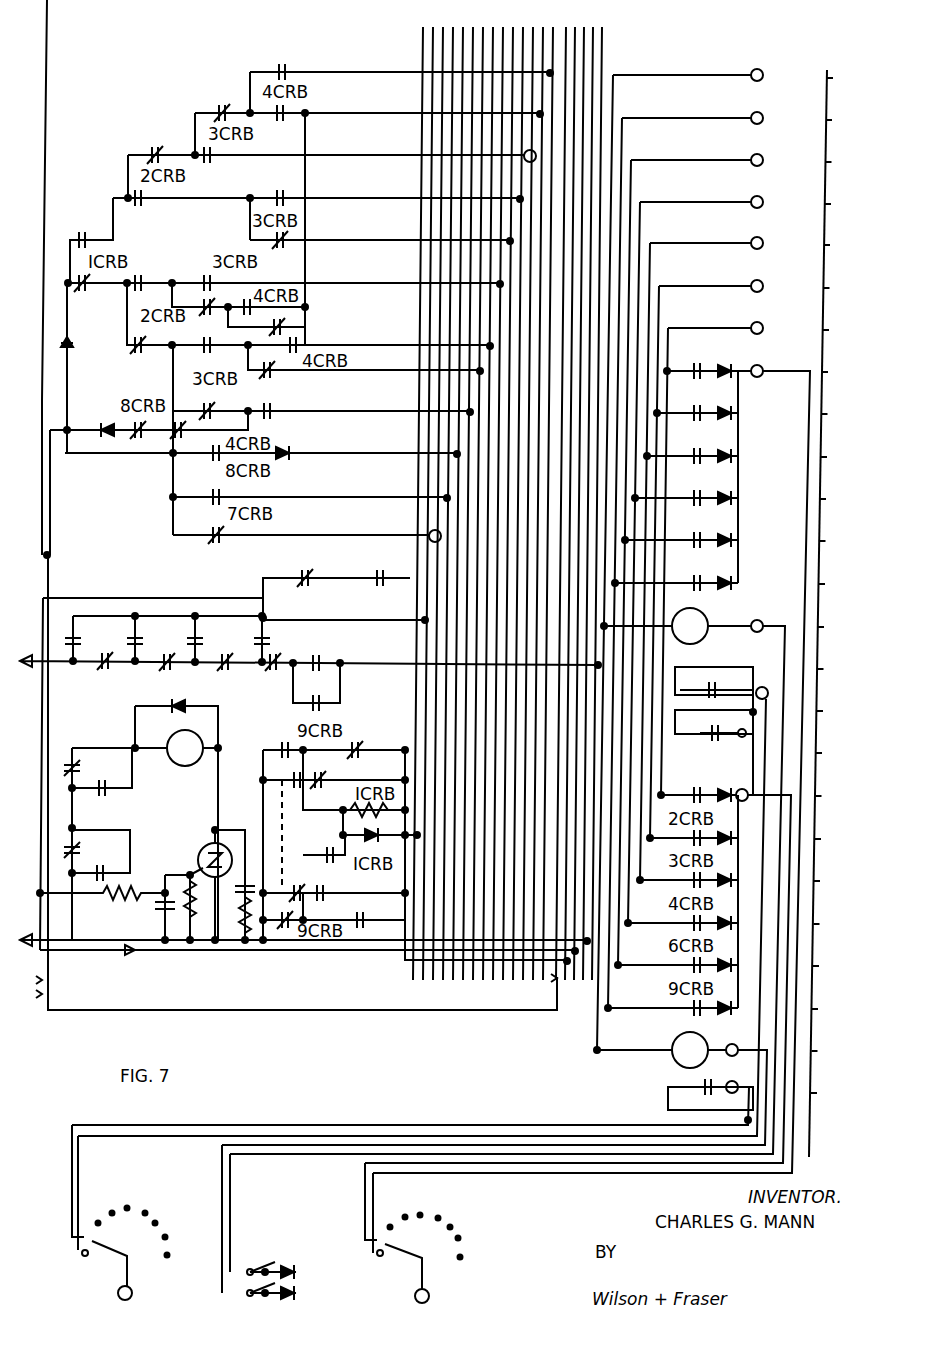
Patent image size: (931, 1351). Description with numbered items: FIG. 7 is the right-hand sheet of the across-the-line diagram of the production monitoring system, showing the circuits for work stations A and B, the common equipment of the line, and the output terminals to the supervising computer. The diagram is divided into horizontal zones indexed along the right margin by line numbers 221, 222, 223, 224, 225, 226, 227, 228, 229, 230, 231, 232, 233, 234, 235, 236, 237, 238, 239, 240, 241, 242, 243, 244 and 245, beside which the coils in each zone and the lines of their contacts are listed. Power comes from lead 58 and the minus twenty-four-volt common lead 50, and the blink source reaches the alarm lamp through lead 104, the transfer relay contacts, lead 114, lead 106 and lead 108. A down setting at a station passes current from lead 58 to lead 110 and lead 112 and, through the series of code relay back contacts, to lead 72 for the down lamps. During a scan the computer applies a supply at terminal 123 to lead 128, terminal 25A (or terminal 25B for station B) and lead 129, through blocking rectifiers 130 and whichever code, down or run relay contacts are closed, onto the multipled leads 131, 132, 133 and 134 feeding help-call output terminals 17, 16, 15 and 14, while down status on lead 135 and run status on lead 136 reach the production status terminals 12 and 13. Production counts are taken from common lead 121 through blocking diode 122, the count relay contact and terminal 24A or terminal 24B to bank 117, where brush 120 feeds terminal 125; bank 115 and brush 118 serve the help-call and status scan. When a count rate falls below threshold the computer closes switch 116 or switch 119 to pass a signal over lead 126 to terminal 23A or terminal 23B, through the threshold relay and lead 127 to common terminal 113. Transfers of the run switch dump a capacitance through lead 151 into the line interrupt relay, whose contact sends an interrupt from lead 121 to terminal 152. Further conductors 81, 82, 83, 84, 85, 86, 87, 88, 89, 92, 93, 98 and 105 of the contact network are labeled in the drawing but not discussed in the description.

The lead 106 is at (46, 98).
The lead 108 is at (488, 1012).
The lead 58 is at (577, 48).
The common lead 50 is at (597, 52).
The conductor 98 is at (579, 68).
The lead 151 is at (422, 40).
The lead 104 is at (424, 57).
The contact line 89 is at (420, 74).
The contact line 81 is at (420, 115).
The contact line 85 is at (420, 157).
The contact line 87 is at (420, 200).
The contact line 83 is at (420, 242).
The contact line 86 is at (420, 285).
The contact line 82 is at (416, 326).
The contact line 84 is at (420, 371).
The contact line 88 is at (420, 412).
The contact line 92 is at (454, 455).
The contact line 93 is at (420, 500).
The lead 131 is at (455, 453).
The conductor 105 is at (376, 622).
The lead 72 is at (50, 666).
The lead 112 is at (362, 665).
The lead 114 is at (47, 720).
The common terminal 113 is at (763, 75).
The lead 110 is at (615, 98).
The lead 127 is at (623, 112).
The lead 136 is at (683, 116).
The lead 135 is at (683, 158).
The lead 134 is at (683, 200).
The lead 133 is at (683, 241).
The lead 132 is at (683, 284).
The terminal 12 is at (779, 119).
The terminal 13 is at (779, 161).
The terminal 14 is at (779, 203).
The terminal 15 is at (779, 244).
The terminal 16 is at (779, 287).
The terminal 17 is at (779, 329).
The lead 129 is at (742, 515).
The blocking rectifiers 130 is at (730, 500).
The terminal 25A is at (760, 364).
The lead 128 is at (796, 383).
The station terminal 23A is at (762, 622).
The lead 126 is at (230, 1180).
The blocking diode 122 is at (735, 660).
The production count terminal 24A is at (760, 687).
The terminal 152 is at (740, 738).
The terminal 25B is at (744, 777).
The station terminal 23B is at (735, 1040).
The production count terminal 24B is at (735, 1078).
The common lead 121 is at (744, 1120).
The line 221 is at (847, 79).
The line 222 is at (846, 121).
The line 223 is at (847, 163).
The line 224 is at (845, 205).
The line 225 is at (844, 246).
The line 226 is at (845, 289).
The line 227 is at (843, 331).
The line 228 is at (842, 373).
The line 229 is at (843, 415).
The line 230 is at (841, 458).
The line 231 is at (840, 500).
The line 232 is at (841, 542).
The line 233 is at (839, 585).
The line 234 is at (867, 642).
The line 235 is at (839, 670).
The line 236 is at (837, 712).
The line 237 is at (871, 768).
The line 238 is at (837, 797).
The line 239 is at (835, 840).
The line 240 is at (834, 882).
The line 241 is at (835, 925).
The line 242 is at (833, 967).
The line 243 is at (832, 1010).
The line 244 is at (861, 1066).
The line 245 is at (830, 1094).
The terminal 125 is at (132, 1291).
The bank of contacts 117 is at (182, 1203).
The brush 120 is at (100, 1243).
The switch 116 is at (270, 1268).
The switch 119 is at (270, 1290).
The computer terminal 123 is at (427, 1291).
The bank of contacts 115 is at (488, 1202).
The brush 118 is at (393, 1243).